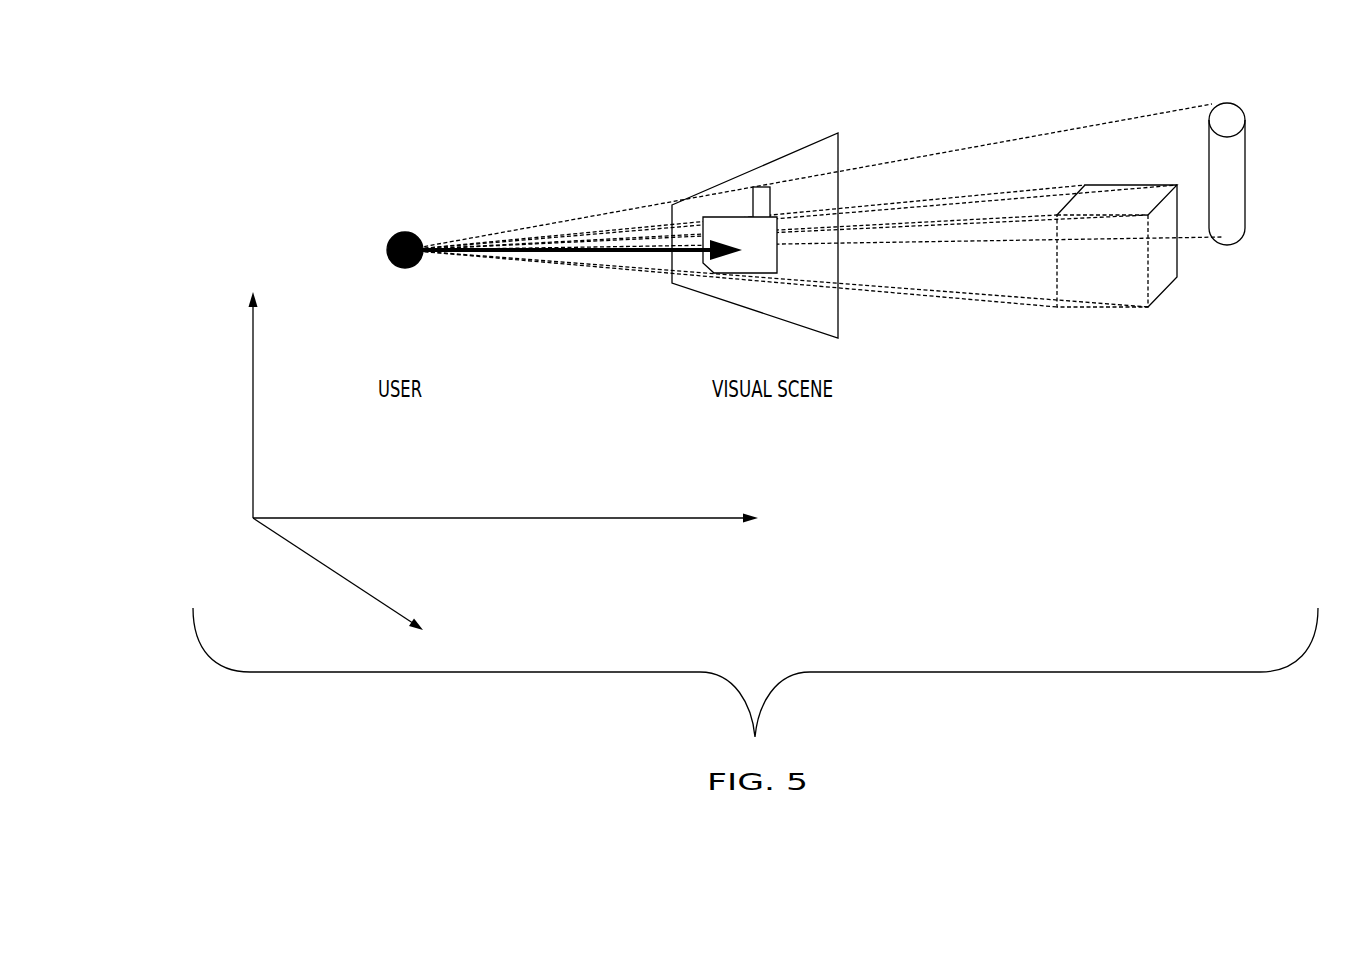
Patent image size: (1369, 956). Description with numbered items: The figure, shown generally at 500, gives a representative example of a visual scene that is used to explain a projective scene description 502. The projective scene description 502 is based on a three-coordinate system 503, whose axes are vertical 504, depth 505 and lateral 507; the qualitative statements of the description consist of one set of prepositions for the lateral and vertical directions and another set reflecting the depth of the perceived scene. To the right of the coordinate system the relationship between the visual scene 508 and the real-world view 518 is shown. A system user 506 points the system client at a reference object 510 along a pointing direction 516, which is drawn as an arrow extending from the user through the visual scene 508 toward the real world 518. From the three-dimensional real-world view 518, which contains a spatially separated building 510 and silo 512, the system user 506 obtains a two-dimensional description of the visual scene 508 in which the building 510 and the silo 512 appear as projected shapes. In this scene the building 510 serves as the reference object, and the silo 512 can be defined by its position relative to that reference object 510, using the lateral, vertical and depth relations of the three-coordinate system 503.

The projective scene description example 500 is at (582, 88).
The projective scene description 502 is at (198, 102).
The three-coordinate system 503 is at (208, 410).
The vertical 504 is at (255, 372).
The depth 505 is at (487, 516).
The system user 506 is at (404, 233).
The lateral 507 is at (350, 583).
The visual scene 508 is at (797, 151).
The reference object 510 is at (733, 216).
The silo 512 is at (760, 187).
The pointing direction 516 is at (628, 253).
The real-world view 518 is at (1084, 387).